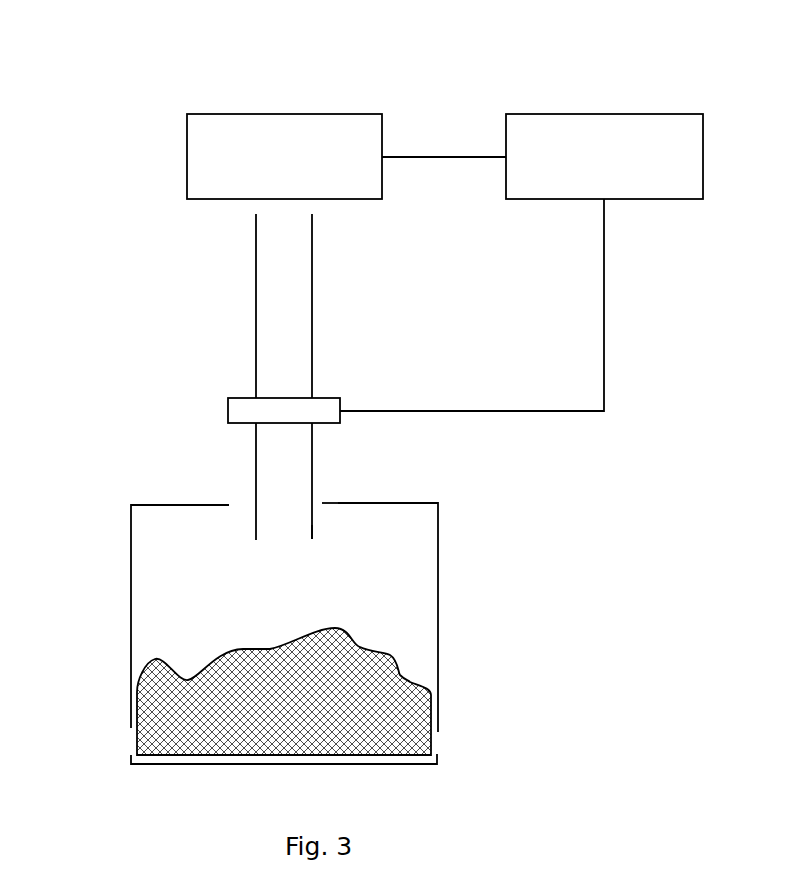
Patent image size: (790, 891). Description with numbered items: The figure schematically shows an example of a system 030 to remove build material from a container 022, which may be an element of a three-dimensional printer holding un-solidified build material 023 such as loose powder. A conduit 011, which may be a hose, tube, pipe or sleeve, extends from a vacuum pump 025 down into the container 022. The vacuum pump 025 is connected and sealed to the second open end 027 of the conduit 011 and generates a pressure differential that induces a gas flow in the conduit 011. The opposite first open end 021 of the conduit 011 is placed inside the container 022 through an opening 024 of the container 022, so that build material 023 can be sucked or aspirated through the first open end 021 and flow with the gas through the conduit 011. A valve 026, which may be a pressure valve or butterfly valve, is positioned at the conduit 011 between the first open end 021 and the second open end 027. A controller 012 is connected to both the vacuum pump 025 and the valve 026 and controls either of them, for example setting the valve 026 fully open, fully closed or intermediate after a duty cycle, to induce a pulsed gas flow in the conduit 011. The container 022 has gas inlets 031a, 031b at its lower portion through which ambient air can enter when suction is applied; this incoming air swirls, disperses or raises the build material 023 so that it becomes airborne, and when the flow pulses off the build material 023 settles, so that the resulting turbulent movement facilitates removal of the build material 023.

The system to remove build material 030 is at (105, 65).
The vacuum pump 025 is at (284, 156).
The controller 012 is at (521, 262).
The conduit 011 is at (256, 287).
The second open end 027 is at (312, 205).
The valve 026 is at (232, 397).
The container 022 is at (131, 558).
The opening 024 is at (322, 503).
The first open end 021 is at (298, 545).
The build material 023 is at (284, 691).
The gas inlet 031a is at (118, 733).
The gas inlet 031b is at (448, 737).